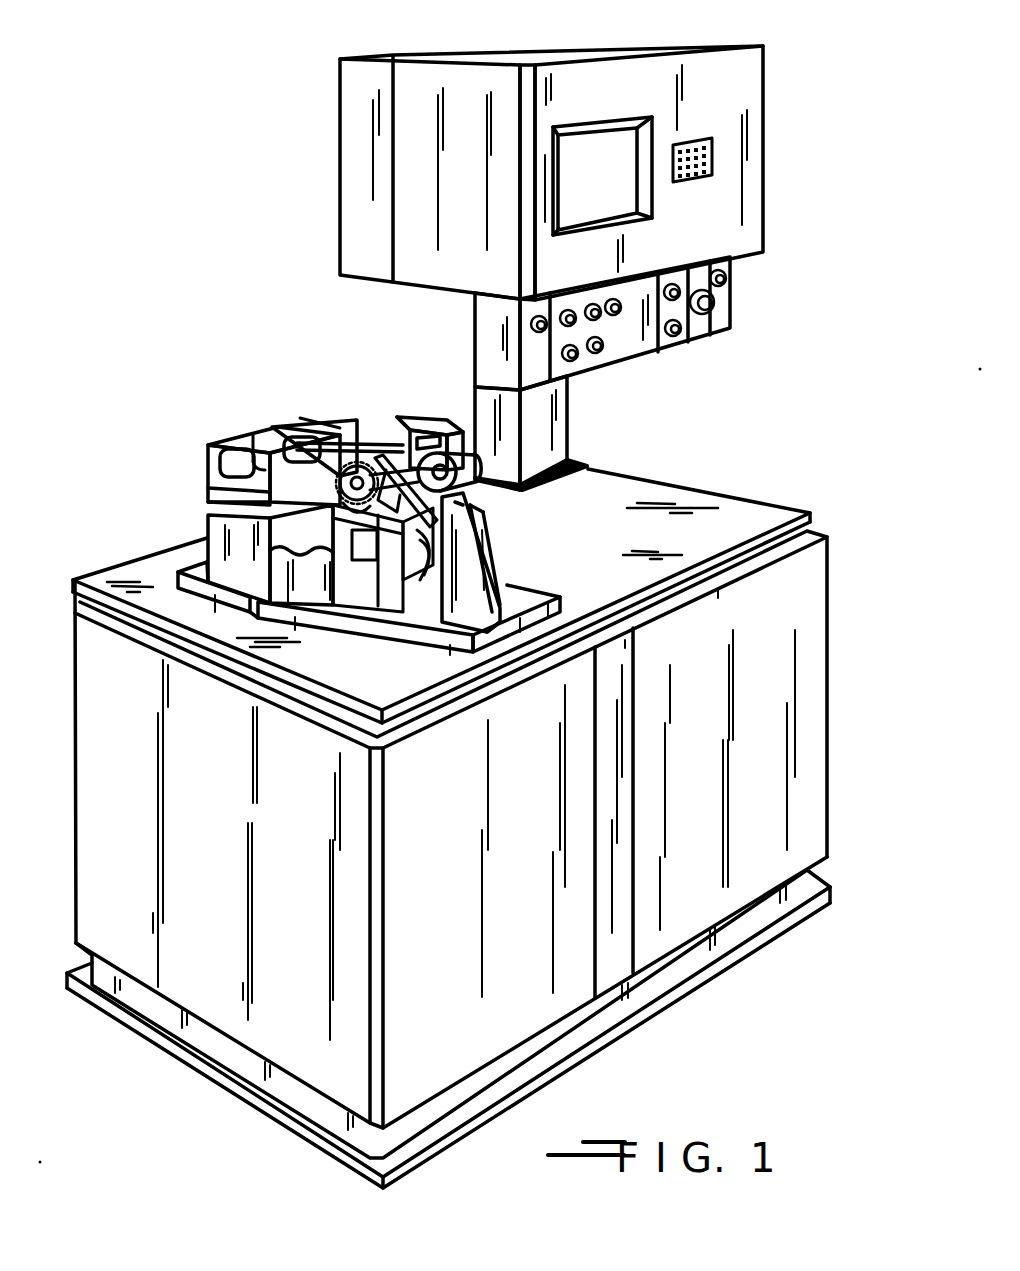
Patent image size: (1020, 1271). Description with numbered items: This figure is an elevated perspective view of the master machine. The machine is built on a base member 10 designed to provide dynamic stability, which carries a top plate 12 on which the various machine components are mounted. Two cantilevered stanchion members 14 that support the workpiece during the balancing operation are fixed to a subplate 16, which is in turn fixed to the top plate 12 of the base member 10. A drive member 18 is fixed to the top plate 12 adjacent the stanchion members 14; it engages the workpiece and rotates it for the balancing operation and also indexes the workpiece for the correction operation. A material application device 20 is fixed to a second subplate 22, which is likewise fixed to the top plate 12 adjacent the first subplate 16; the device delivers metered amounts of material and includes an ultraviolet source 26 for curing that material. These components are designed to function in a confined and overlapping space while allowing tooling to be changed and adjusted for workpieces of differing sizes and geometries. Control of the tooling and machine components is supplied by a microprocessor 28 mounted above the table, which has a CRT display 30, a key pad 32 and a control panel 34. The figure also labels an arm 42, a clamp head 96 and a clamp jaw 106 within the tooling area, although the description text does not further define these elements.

The cabinet body 10 is at (800, 628).
The table top 12 is at (760, 517).
The support block 14 is at (400, 597).
The base plate 16 is at (533, 600).
The roller 18 is at (466, 500).
The pedestal 20 is at (200, 518).
The base plate 22 is at (183, 587).
The spindle drive housing 26 is at (462, 438).
The control cabinet 28 is at (717, 82).
The display screen 30 is at (617, 182).
The control panel buttons 32 is at (617, 333).
The control knobs 34 is at (717, 320).
The arm 42 is at (350, 597).
The clamp head 96 is at (215, 465).
The clamp jaw 106 is at (253, 440).